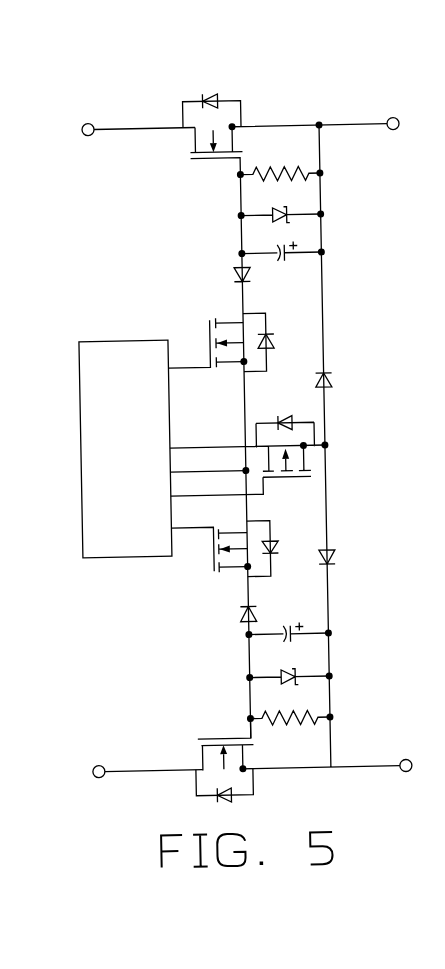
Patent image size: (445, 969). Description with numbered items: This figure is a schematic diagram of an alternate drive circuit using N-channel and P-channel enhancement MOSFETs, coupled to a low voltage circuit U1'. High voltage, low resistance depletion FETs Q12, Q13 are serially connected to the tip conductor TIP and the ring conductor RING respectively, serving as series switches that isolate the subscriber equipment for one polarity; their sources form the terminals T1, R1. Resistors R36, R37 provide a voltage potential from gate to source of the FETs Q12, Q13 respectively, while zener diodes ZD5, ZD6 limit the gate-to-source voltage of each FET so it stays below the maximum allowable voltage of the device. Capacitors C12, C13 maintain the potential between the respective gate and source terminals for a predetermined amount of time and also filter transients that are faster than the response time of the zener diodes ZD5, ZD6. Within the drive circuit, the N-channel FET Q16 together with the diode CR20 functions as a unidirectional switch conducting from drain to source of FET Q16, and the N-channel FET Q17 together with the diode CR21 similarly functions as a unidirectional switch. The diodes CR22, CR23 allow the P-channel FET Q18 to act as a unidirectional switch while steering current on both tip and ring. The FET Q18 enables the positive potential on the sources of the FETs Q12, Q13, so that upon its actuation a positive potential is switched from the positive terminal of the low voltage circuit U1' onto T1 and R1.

The tip conductor TIP is at (83, 122).
The T1 terminal T1 is at (393, 114).
The ring conductor RING is at (91, 763).
The R1 terminal R1 is at (405, 756).
The depletion FET Q12 is at (201, 130).
The depletion FET Q13 is at (208, 761).
The N-channel enhancement MOSFET Q16 is at (220, 338).
The N-channel enhancement MOSFET Q17 is at (225, 552).
The P-channel enhancement MOSFET Q18 is at (247, 445).
The resistor R36 is at (280, 163).
The resistor R37 is at (290, 710).
The zener diode ZD5 is at (281, 204).
The zener diode ZD6 is at (289, 669).
The capacitor C12 is at (282, 258).
The capacitor C13 is at (288, 622).
The diode CR20 is at (219, 276).
The diode CR21 is at (225, 616).
The diode CR22 is at (345, 381).
The diode CR23 is at (348, 559).
The low voltage circuit U1' is at (120, 432).